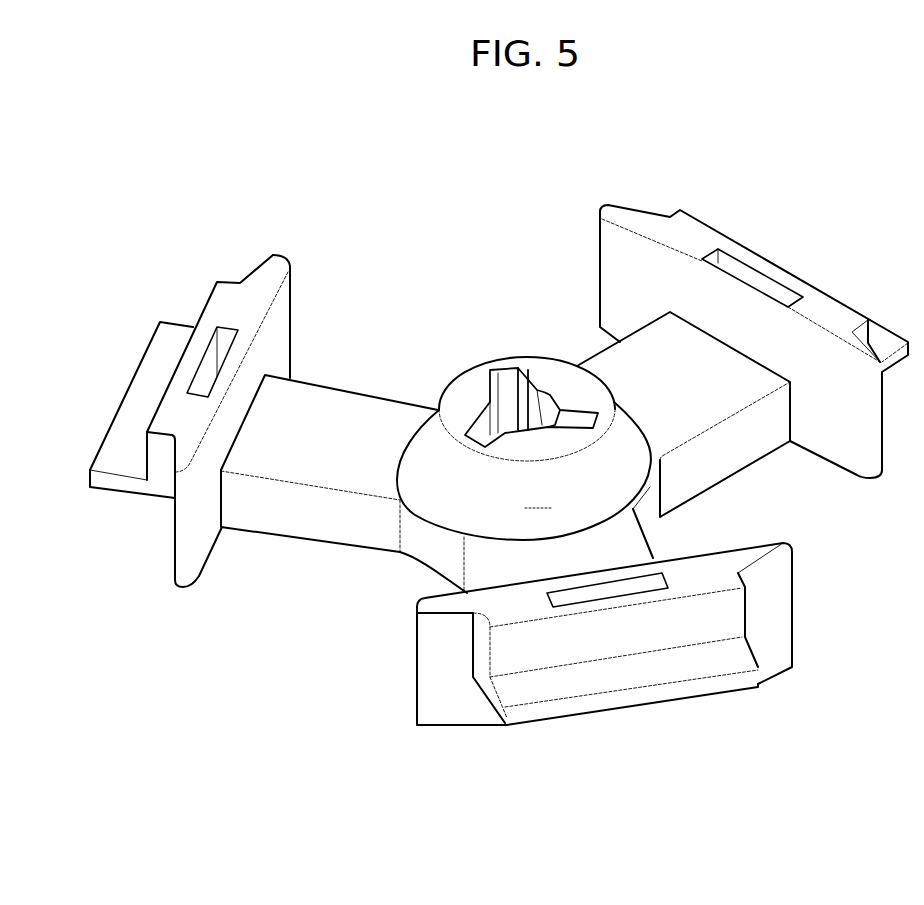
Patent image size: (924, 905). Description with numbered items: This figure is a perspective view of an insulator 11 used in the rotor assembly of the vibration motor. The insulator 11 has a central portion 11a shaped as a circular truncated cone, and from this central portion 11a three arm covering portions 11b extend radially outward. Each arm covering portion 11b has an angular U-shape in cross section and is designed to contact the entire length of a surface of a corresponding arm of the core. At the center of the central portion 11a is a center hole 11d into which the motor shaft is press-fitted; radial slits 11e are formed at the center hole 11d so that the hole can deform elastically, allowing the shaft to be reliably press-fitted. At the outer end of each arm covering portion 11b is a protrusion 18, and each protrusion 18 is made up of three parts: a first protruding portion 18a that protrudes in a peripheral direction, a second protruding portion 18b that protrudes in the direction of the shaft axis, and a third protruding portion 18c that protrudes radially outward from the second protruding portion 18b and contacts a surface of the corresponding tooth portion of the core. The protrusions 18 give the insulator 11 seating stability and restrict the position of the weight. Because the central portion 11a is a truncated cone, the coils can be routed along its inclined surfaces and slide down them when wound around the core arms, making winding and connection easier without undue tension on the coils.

The insulator 11 is at (388, 158).
The central portion 11a is at (431, 447).
The arm covering portion 11b is at (323, 475).
The center hole 11d is at (543, 397).
The radial slit 11e is at (507, 367).
The protrusion 18 is at (212, 255).
The first protruding portion 18a is at (853, 384).
The second protruding portion 18b is at (743, 320).
The third protruding portion 18c is at (884, 338).